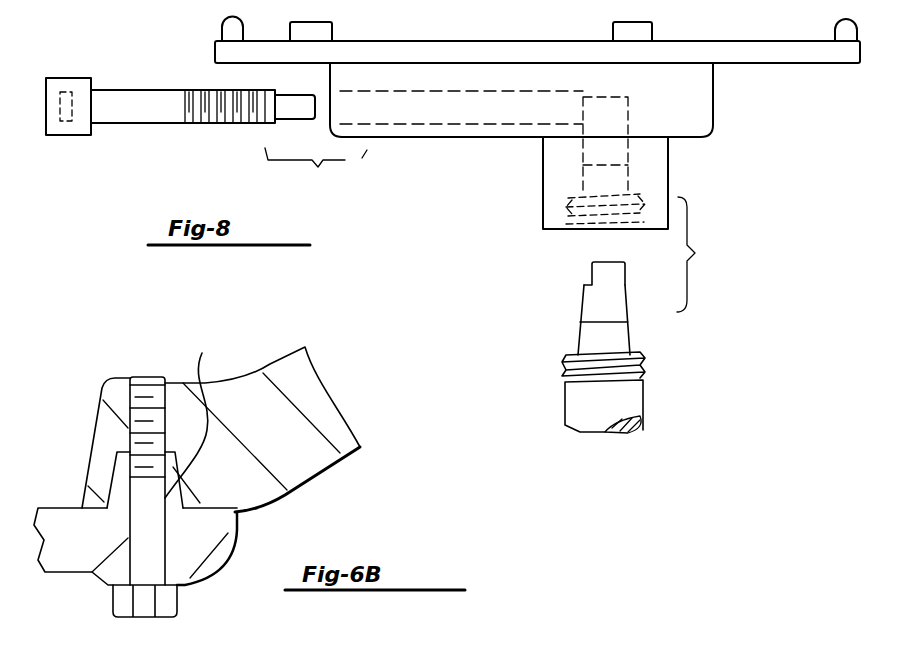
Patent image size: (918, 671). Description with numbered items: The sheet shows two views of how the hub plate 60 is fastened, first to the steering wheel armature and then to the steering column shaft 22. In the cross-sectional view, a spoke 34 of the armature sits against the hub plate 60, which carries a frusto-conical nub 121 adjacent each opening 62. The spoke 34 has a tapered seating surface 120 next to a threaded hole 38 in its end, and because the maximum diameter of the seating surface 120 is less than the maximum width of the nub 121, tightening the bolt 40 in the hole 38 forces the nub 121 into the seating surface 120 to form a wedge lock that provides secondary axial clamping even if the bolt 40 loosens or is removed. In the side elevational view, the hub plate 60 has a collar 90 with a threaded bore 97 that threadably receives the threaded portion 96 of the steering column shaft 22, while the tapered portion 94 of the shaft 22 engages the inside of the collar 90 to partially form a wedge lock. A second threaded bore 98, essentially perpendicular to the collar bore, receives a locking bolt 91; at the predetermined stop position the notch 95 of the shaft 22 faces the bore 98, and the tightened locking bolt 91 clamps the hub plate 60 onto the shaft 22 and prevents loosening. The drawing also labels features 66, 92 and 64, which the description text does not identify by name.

In FIG. 8, the locating protrusion 66 is at (232, 28).
In FIG. 8, the hub plate 60 is at (763, 66).
In FIG. 6B, the hub plate 60 is at (72, 555).
In FIG. 8, the second threaded bore 98 is at (472, 130).
In FIG. 8, the threaded hole 92 is at (578, 184).
In FIG. 8, the collar 90 is at (648, 176).
In FIG. 8, the threaded bore 97 is at (590, 230).
In FIG. 8, the fastener assembly 64 is at (727, 203).
In FIG. 8, the locking bolt 91 is at (158, 113).
In FIG. 8, the tapered portion 94 is at (618, 340).
In FIG. 8, the notch 95 is at (588, 287).
In FIG. 8, the threaded portion 96 is at (585, 372).
In FIG. 8, the steering column shaft 22 is at (632, 398).
In FIG. 6B, the threaded holes 38 is at (145, 392).
In FIG. 6B, the bolts 40 is at (150, 618).
In FIG. 6B, the seating surface 120 is at (113, 483).
In FIG. 6B, the opening 62 is at (162, 548).
In FIG. 6B, the nub 121 is at (206, 415).
In FIG. 6B, the spokes 34 is at (310, 372).